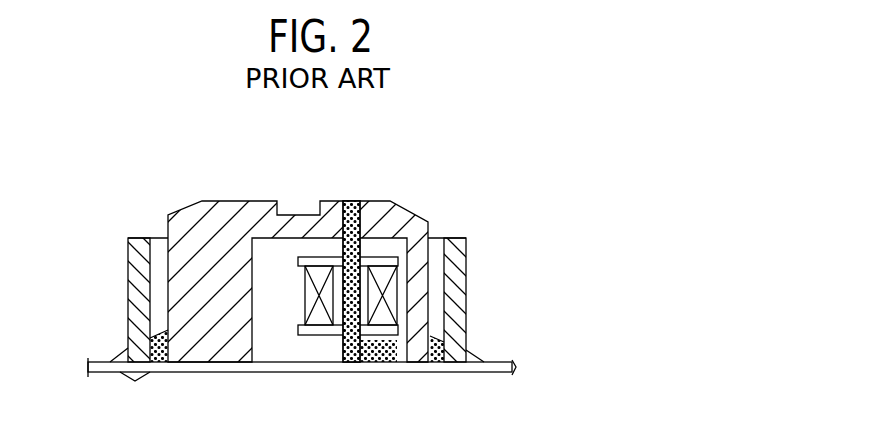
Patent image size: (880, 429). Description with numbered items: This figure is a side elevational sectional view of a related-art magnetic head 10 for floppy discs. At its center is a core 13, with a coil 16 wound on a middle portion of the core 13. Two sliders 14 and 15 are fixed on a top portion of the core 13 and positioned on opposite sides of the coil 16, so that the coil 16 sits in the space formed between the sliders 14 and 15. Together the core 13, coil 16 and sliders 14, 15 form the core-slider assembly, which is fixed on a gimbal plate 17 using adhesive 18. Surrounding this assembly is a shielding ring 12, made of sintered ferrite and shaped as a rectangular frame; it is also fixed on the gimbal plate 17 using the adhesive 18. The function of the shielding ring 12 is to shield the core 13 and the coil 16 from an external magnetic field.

The magnetic head 10 is at (494, 179).
The shielding ring 12 is at (138, 284).
The core 13 is at (351, 206).
The slider 14 is at (190, 233).
The slider 15 is at (414, 239).
The coil 16 is at (383, 317).
The gimbal plate 17 is at (450, 372).
The adhesive 18 is at (282, 372).